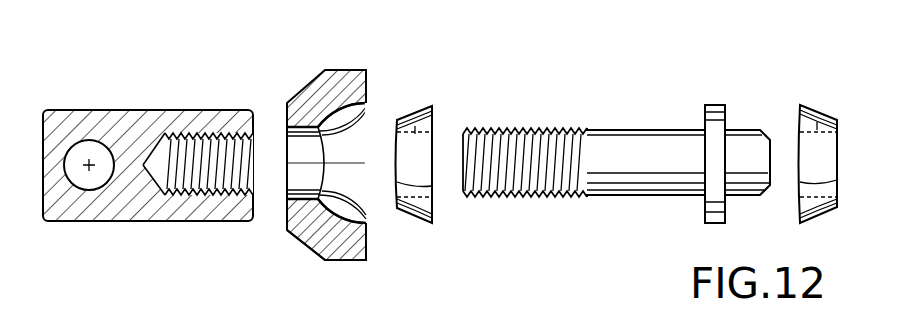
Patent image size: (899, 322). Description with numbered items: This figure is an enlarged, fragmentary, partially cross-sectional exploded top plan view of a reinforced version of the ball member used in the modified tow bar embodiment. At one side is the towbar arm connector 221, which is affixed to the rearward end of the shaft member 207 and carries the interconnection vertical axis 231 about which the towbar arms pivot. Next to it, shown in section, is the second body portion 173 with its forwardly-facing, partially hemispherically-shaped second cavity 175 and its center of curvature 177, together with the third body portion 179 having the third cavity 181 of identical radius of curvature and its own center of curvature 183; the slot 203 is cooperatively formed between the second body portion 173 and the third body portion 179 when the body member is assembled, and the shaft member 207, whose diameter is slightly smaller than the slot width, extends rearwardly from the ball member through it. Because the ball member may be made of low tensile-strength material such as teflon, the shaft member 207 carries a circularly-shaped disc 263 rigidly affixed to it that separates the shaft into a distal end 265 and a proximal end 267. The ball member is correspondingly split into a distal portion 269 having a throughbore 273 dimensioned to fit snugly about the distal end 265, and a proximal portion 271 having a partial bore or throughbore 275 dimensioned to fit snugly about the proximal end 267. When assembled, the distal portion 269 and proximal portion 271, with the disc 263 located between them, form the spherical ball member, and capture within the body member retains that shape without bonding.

The towbar arm connector 221 is at (133, 110).
The interconnection vertical axis 231 is at (88, 163).
The second body portion 173 is at (310, 88).
The second cavity 175 is at (330, 108).
The center of curvature 183 is at (348, 120).
The center of curvature 177 is at (370, 163).
The slot 203 is at (307, 183).
The third cavity 181 is at (355, 195).
The third body portion 179 is at (343, 253).
The throughbore 273 is at (422, 104).
The distal portion 269 is at (410, 222).
The shaft member 207 is at (616, 125).
The distal end 265 is at (650, 130).
The disc 263 is at (713, 108).
The proximal end 267 is at (743, 132).
The proximal portion 271 is at (807, 110).
The partial bore or throughbore 275 is at (817, 127).